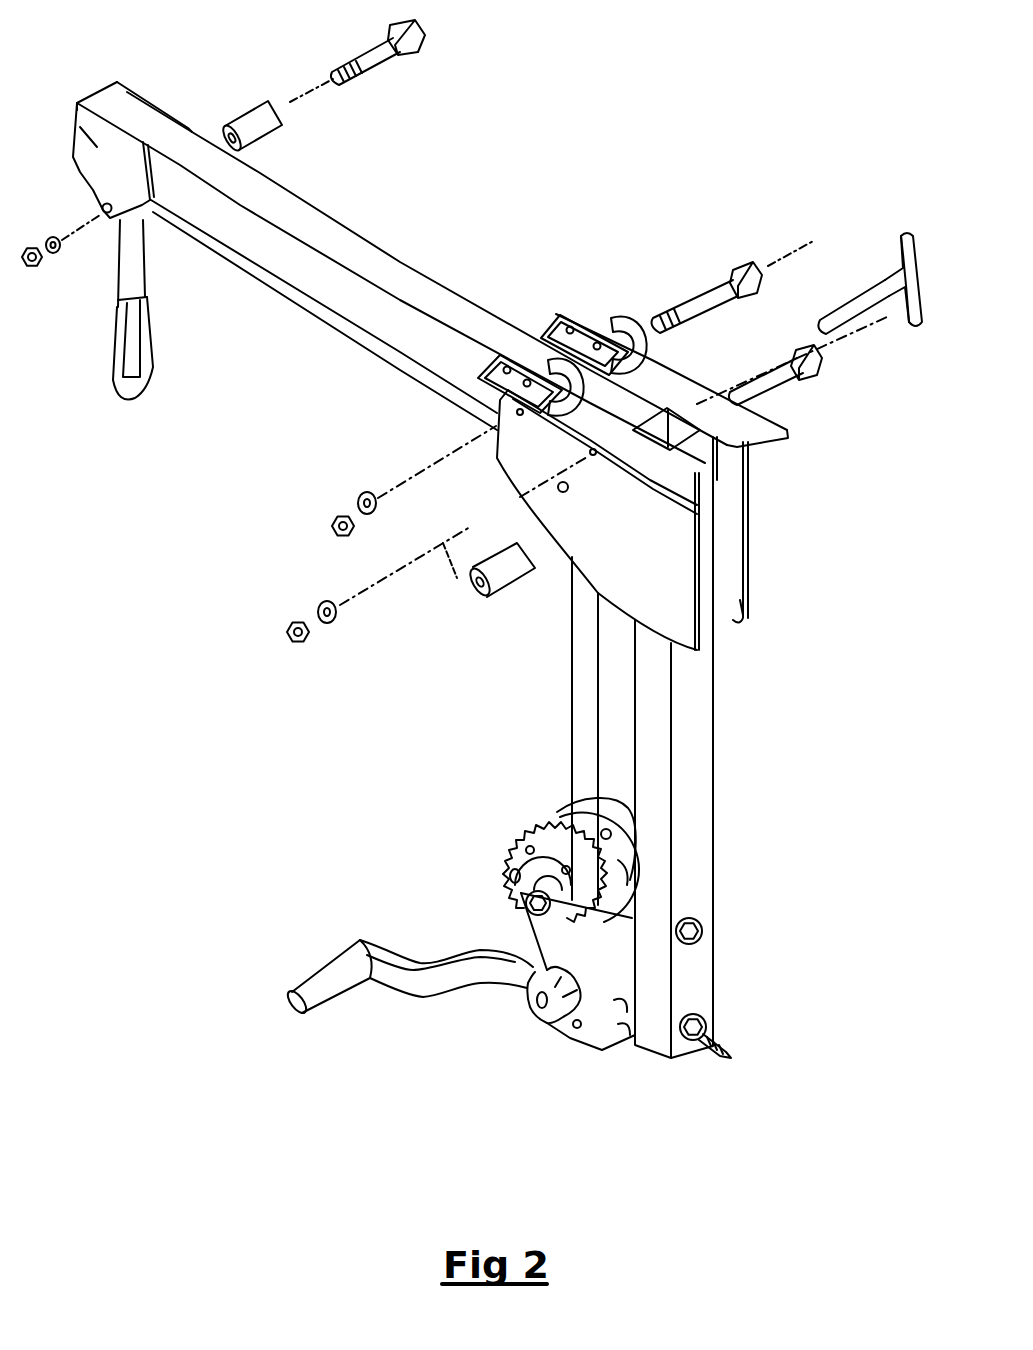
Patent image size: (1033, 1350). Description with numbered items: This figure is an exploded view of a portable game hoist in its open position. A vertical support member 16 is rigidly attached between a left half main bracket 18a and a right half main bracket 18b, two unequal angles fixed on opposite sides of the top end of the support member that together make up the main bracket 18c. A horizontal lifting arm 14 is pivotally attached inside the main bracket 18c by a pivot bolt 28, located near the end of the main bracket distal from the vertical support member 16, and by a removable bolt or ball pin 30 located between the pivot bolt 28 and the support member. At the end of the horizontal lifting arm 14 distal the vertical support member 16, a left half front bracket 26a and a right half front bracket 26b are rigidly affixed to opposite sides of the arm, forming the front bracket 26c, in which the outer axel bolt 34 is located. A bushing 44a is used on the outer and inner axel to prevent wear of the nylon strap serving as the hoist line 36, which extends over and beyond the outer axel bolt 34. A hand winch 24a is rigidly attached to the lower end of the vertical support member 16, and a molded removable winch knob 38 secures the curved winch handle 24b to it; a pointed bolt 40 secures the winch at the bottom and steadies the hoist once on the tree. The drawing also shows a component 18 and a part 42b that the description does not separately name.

The horizontal lifting arm 14 is at (327, 283).
The vertical support member 16 is at (683, 837).
The bolt 18 is at (768, 378).
The left half main bracket 18a is at (665, 621).
The right half main bracket 18b is at (727, 607).
The main bracket 18c is at (813, 633).
The hand winch 24a is at (545, 932).
The curved winch handle 24b is at (443, 983).
The left half front bracket 26a is at (73, 118).
The right half front bracket 26b is at (127, 90).
The front bracket 26c is at (205, 58).
The pivot bolt 28 is at (712, 295).
The removable bolt or ball pin 30 is at (868, 297).
The outer axel bolt 34 is at (367, 62).
The hoist line 36 is at (130, 267).
The molded removable winch knob 38 is at (530, 1014).
The pointed bolt 40 is at (698, 1044).
The hook 42b is at (573, 317).
The bushing 44a is at (257, 127).